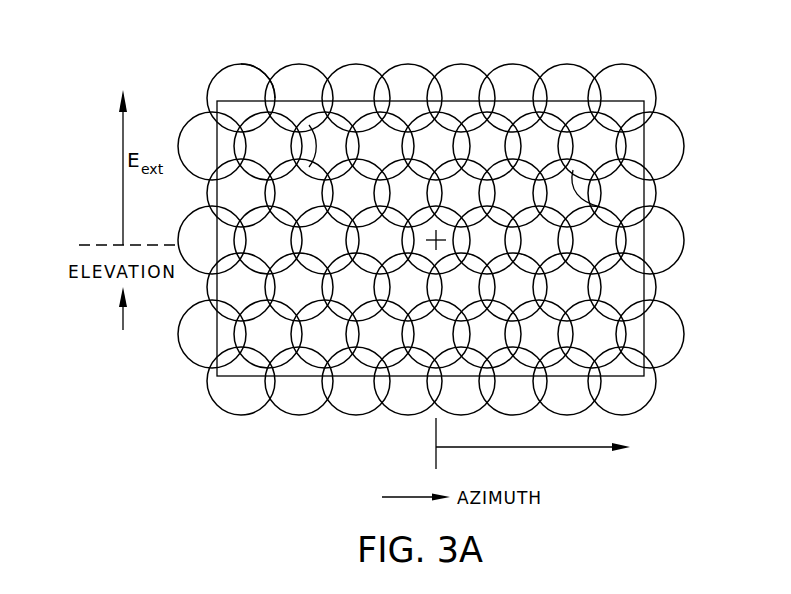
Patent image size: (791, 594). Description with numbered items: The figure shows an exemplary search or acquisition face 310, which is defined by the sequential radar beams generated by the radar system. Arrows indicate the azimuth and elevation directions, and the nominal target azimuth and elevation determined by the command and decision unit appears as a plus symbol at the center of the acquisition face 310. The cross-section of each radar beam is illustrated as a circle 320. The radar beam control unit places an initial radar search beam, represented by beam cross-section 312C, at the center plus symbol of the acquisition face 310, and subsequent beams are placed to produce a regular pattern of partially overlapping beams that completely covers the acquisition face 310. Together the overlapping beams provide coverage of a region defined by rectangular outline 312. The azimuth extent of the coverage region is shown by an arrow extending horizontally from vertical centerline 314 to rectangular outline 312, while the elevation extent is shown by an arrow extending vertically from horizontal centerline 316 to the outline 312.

The acquisition face 310 is at (296, 457).
The rectangular outline 312 is at (457, 100).
The beam cross-section 312C is at (468, 238).
The vertical centerline 314 is at (432, 418).
The horizontal centerline 316 is at (104, 245).
The circle 320 is at (242, 66).